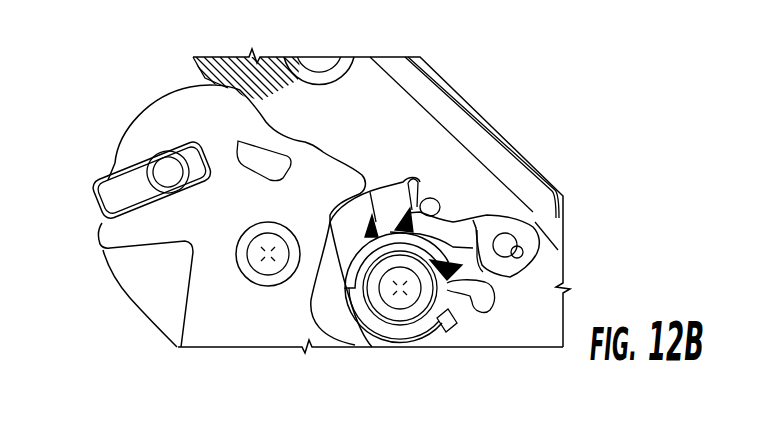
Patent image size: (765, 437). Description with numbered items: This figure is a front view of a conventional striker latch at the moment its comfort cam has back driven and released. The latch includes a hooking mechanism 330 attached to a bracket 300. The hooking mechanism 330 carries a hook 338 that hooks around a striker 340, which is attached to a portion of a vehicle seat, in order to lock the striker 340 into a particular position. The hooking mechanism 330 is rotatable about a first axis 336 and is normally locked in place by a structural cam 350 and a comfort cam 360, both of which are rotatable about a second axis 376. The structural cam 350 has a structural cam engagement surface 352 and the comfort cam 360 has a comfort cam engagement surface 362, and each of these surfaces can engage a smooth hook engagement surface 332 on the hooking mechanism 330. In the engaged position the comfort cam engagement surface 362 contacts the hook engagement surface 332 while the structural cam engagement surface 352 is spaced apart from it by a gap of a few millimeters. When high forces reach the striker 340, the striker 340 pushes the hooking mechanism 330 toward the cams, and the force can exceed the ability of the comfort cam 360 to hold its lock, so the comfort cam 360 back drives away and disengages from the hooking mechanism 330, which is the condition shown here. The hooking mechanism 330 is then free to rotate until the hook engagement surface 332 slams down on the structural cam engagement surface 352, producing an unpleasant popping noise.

The bracket 300 is at (237, 56).
The hooking mechanism 330 is at (199, 358).
The hook engagement surface 332 is at (330, 222).
The first axis 336 is at (253, 257).
The hook 338 is at (170, 140).
The striker 340 is at (95, 203).
The structural cam 350 is at (372, 347).
The structural cam engagement surface 352 is at (336, 222).
The comfort cam 360 is at (413, 208).
The comfort cam engagement surface 362 is at (420, 198).
The second axis 376 is at (405, 292).